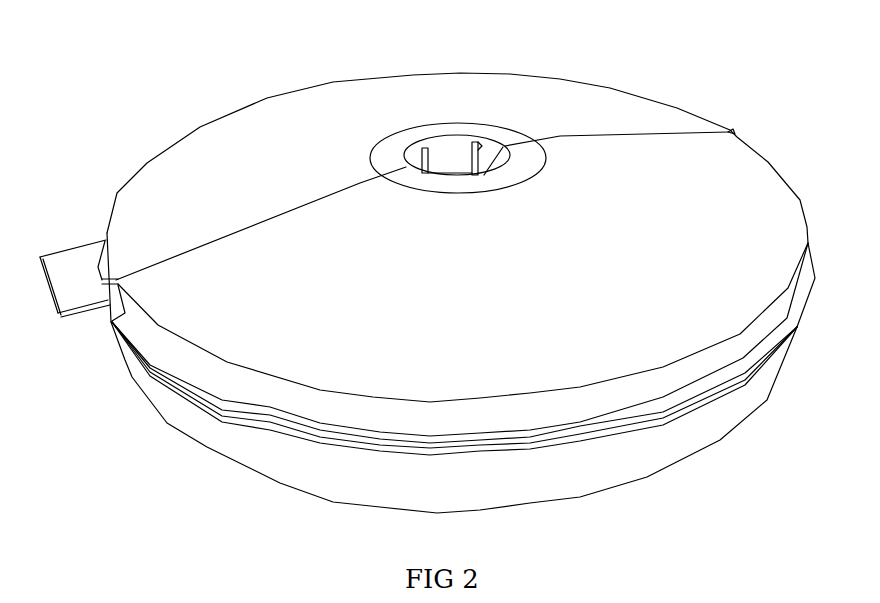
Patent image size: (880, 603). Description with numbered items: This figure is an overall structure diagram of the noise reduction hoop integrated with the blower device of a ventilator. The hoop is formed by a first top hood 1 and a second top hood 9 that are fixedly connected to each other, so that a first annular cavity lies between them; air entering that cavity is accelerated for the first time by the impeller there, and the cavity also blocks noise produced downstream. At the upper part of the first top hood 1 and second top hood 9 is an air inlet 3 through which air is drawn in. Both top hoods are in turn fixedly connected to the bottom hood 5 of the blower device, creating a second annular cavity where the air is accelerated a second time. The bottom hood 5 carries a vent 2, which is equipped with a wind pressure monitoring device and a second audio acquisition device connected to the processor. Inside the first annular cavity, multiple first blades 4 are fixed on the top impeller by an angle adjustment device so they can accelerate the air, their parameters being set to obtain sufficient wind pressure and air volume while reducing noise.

The first top hood 1 is at (205, 155).
The vent 2 is at (73, 270).
The air inlet 3 is at (448, 156).
The first blades 4 is at (483, 154).
The second top hood 9 is at (690, 225).
The bottom hood 5 is at (700, 432).